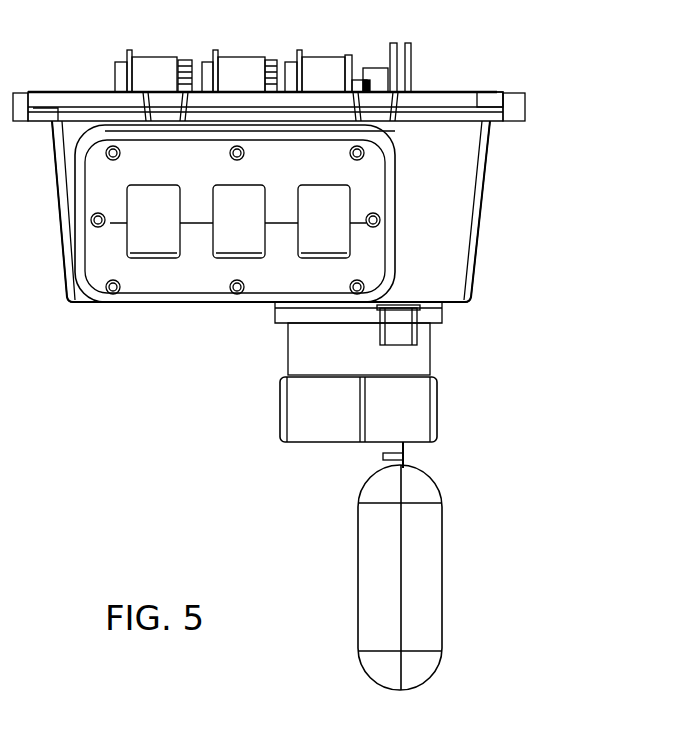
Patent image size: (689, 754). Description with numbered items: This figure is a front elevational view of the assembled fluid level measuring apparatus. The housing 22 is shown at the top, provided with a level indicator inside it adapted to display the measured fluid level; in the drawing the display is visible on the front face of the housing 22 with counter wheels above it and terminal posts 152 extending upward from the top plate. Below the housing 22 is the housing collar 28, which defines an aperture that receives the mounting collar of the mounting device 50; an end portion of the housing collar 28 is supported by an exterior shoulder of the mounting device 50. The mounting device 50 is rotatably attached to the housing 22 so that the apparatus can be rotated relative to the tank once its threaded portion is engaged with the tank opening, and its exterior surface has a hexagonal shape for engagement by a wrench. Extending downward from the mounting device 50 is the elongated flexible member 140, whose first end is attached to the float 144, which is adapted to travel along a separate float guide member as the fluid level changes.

The housing 22 is at (493, 213).
The posts / terminals 152 is at (400, 70).
The housing collar 28 is at (430, 352).
The mounting device 50 is at (446, 398).
The elongated flexible member 140 is at (405, 455).
The float 144 is at (442, 580).